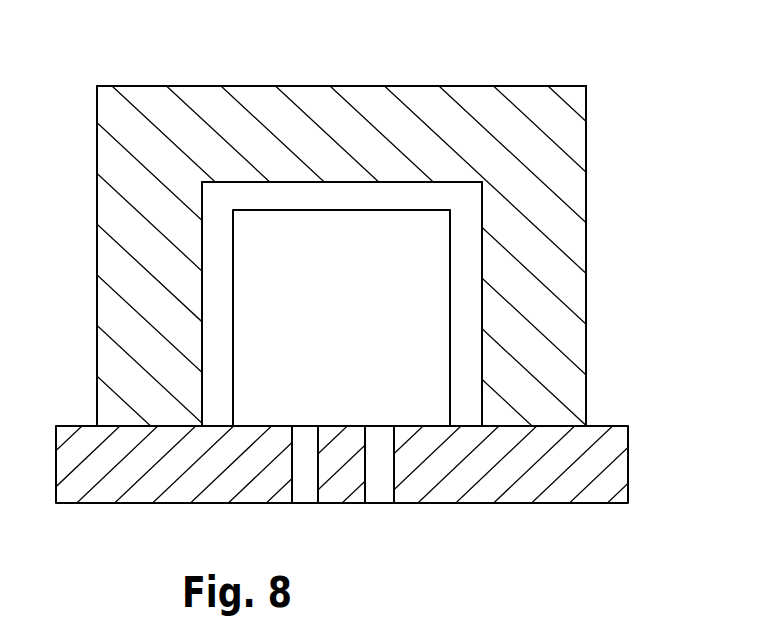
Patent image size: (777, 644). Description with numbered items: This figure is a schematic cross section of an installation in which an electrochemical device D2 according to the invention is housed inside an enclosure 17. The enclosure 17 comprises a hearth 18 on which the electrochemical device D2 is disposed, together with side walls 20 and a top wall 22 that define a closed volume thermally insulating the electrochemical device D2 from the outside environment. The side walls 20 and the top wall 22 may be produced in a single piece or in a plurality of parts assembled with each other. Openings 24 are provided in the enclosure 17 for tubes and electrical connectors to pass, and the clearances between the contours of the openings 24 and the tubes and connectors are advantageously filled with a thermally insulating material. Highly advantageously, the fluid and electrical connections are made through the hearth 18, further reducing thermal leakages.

The enclosure 17 is at (637, 137).
The hearth 18 is at (412, 485).
The side walls 20 is at (155, 300).
The top wall 22 is at (338, 128).
The openings 24 is at (313, 476).
The electrochemical device D2 is at (405, 272).